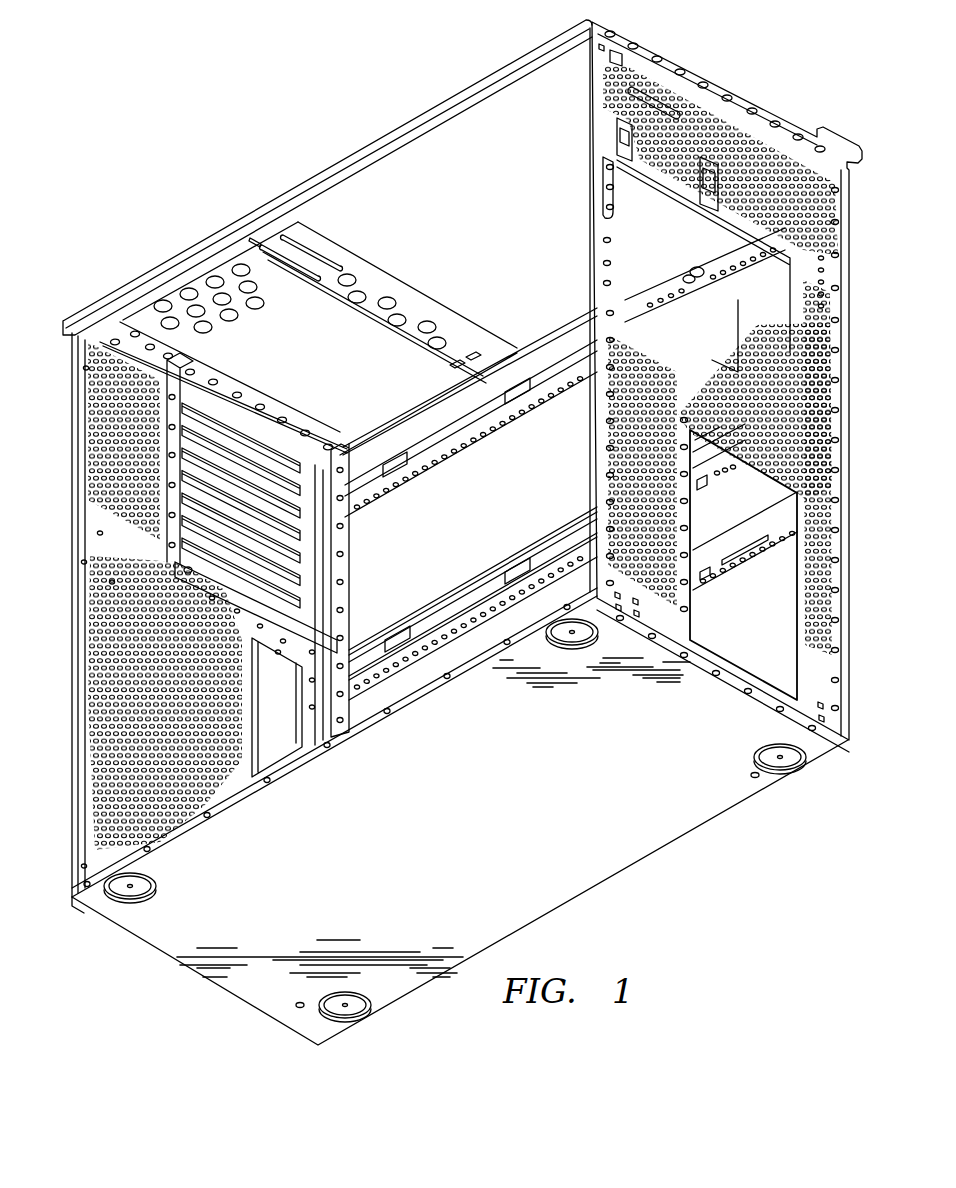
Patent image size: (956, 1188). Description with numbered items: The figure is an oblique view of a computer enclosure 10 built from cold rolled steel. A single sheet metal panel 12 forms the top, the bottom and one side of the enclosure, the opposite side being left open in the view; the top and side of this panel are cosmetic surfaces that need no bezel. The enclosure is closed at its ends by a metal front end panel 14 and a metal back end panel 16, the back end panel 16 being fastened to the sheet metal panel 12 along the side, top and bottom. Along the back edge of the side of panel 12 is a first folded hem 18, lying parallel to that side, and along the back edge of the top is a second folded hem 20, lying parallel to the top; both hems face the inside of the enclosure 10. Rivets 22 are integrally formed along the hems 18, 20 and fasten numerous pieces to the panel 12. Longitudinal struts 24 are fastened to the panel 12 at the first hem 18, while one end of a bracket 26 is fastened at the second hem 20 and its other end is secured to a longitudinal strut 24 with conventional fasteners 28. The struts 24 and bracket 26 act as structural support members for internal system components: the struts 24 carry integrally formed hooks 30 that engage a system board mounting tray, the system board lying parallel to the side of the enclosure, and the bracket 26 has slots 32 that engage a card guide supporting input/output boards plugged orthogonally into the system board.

The computer enclosure 10 is at (296, 90).
The sheet metal panel 12 is at (461, 94).
The front end panel 14 is at (589, 158).
The back end panel 16 is at (68, 574).
The first folded hem 18 is at (350, 607).
The second folded hem 20 is at (237, 380).
The rivets 22 is at (284, 424).
The longitudinal struts 24 is at (443, 467).
The bracket 26 is at (400, 280).
The conventional fasteners 28 is at (482, 387).
The hooks 30 is at (180, 338).
The slots 32 is at (302, 243).